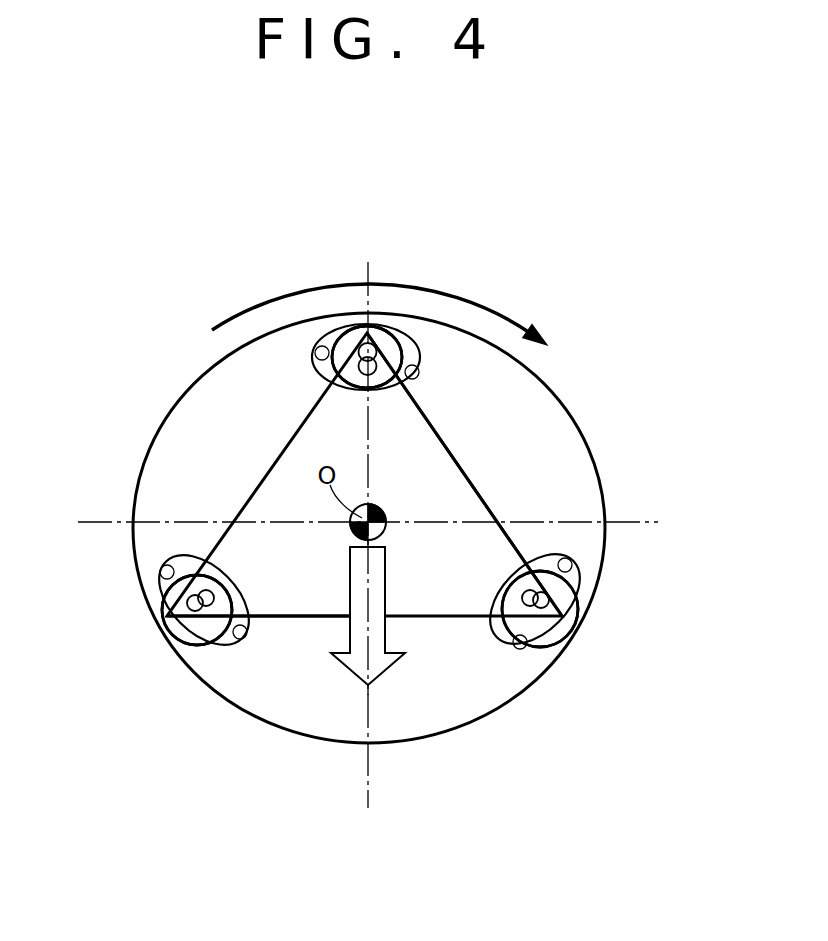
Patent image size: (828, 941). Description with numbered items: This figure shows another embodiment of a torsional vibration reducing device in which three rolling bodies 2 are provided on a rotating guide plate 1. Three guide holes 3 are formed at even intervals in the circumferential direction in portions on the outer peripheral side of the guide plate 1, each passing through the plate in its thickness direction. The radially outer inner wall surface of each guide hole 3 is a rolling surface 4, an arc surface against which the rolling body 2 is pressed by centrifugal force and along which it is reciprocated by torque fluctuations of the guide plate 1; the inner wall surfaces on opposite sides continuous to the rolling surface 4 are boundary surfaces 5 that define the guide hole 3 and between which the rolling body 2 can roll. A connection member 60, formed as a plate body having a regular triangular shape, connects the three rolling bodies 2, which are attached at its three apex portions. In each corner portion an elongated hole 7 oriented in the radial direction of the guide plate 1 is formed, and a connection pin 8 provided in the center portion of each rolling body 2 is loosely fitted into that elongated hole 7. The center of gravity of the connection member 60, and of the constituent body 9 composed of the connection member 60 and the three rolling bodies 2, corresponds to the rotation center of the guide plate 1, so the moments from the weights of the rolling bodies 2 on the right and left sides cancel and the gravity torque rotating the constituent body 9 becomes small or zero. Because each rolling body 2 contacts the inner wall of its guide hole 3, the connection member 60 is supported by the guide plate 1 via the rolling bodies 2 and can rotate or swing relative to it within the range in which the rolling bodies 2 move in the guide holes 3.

The guide plate 1 is at (148, 448).
The rolling body 2 is at (400, 345).
The guide hole 3 is at (320, 357).
The rolling surface 4 is at (342, 325).
The boundary surface 5 is at (420, 358).
The elongated hole 7 is at (328, 378).
The connection pin 8 is at (374, 353).
The constituent body 9 is at (293, 630).
The connection member 60 is at (463, 465).